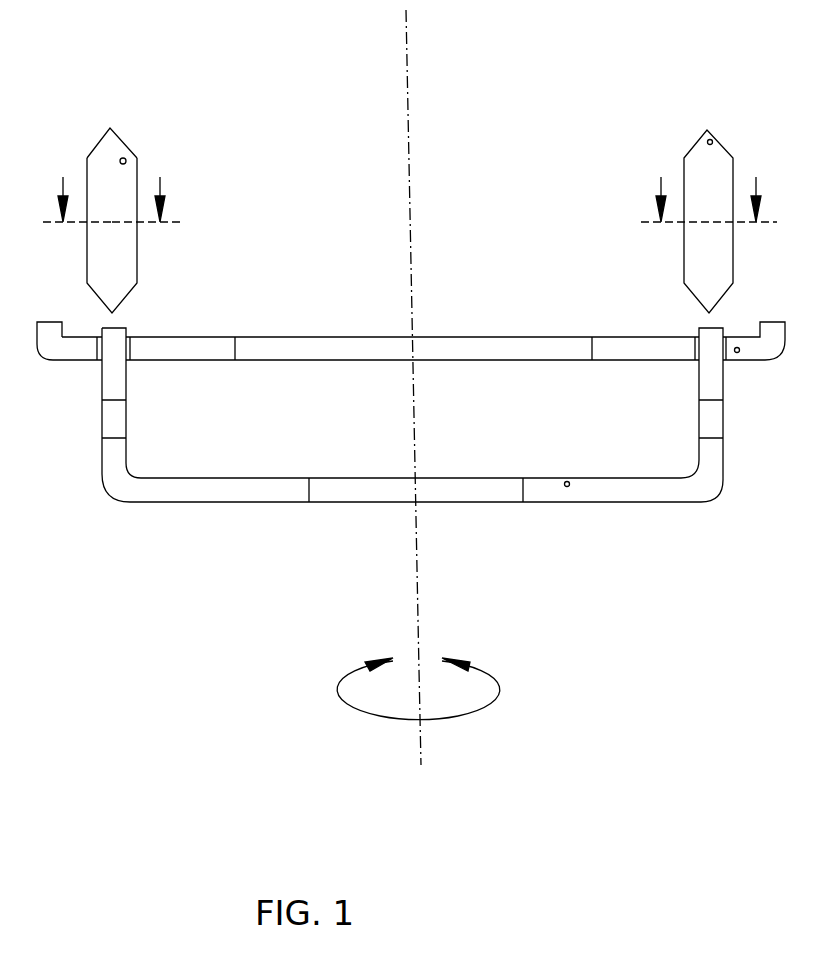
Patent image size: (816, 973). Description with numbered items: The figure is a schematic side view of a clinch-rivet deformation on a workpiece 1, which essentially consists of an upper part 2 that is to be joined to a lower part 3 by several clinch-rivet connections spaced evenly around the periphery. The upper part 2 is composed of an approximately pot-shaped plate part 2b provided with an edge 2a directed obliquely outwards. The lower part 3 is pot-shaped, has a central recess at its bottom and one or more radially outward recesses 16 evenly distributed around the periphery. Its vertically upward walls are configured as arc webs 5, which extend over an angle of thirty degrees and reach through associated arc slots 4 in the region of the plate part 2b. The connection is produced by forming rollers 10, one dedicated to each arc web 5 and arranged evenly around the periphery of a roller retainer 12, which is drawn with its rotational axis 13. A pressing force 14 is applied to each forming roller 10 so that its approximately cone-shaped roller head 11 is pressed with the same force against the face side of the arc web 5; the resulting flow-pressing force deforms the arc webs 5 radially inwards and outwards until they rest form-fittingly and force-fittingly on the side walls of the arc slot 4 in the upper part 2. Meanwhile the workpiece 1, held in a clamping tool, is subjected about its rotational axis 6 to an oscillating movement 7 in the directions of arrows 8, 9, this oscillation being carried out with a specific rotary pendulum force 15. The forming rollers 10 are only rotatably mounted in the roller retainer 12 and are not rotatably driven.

The workpiece 1 is at (733, 370).
The upper part 2 is at (737, 348).
The edge 2a is at (58, 345).
The plate part 2b is at (226, 347).
The lower part 3 is at (567, 486).
The arc slot 4 is at (127, 347).
The arc web 5 is at (108, 330).
The rotational axis 6 is at (409, 130).
The oscillating movement 7 is at (423, 722).
The direction of arrow 8 is at (347, 703).
The direction of arrow 9 is at (492, 702).
The forming roller 10 is at (125, 160).
The roller head 11 is at (108, 123).
The roller retainer 12 is at (52, 222).
The rotational axis 13 is at (173, 222).
The pressing force 14 is at (158, 183).
The pendulum force 15 is at (417, 664).
The recess 16 is at (712, 415).